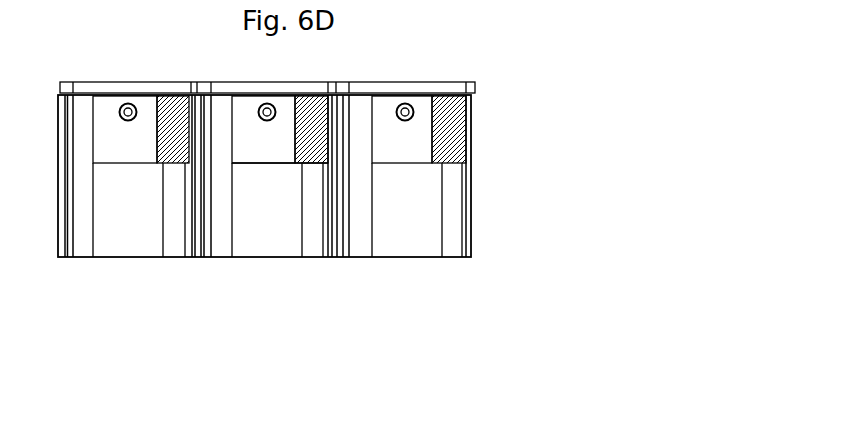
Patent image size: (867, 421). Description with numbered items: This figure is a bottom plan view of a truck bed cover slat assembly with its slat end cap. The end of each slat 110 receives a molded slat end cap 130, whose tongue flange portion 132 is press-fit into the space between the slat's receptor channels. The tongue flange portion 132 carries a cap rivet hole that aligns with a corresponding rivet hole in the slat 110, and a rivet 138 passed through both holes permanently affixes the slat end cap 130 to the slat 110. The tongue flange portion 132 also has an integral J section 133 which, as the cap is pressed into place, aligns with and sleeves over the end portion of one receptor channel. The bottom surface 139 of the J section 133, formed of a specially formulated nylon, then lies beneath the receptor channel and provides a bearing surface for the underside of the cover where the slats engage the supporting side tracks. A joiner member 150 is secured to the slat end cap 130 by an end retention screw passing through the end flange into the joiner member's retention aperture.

The slat 110 is at (417, 258).
The slat end cap 130 is at (298, 83).
The tongue flange portion 132 is at (122, 150).
The J section 133 is at (298, 165).
The rivet 138 is at (407, 101).
The bottom surface 139 is at (168, 97).
The joiner member 150 is at (337, 258).